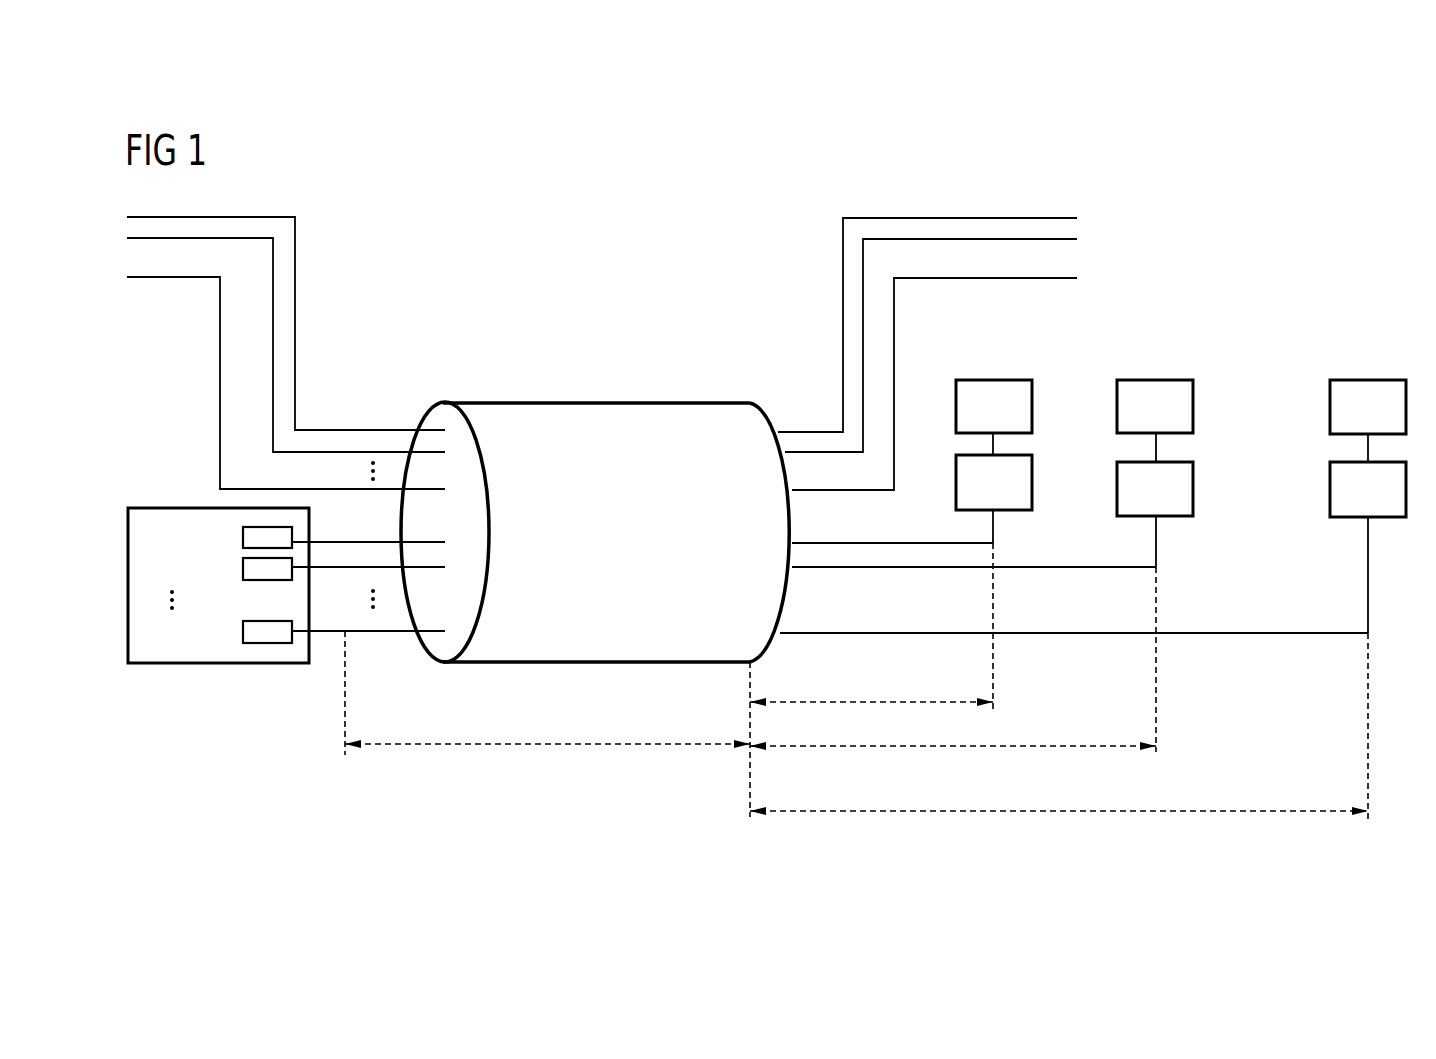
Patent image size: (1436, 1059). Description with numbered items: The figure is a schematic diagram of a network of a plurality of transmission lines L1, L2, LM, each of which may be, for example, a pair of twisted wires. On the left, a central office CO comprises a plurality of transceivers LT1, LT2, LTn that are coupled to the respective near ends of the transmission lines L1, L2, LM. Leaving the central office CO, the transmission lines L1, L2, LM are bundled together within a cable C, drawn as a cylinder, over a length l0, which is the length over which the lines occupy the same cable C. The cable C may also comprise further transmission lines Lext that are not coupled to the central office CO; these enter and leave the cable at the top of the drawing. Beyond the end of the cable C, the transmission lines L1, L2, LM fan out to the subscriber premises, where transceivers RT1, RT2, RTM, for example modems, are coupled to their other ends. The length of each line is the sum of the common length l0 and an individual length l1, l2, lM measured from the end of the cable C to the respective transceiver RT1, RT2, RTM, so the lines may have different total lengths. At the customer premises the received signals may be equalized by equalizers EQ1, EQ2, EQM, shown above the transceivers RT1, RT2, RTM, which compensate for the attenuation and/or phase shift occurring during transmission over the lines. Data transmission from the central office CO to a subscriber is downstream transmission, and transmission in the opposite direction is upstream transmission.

The central office CO is at (156, 506).
The transceiver LT1 is at (316, 541).
The transceiver LT2 is at (316, 573).
The transceiver LTn is at (316, 636).
The cable C is at (597, 402).
The transmission lines Lext is at (1097, 212).
The transmission line L1 is at (906, 542).
The transmission line L2 is at (1066, 567).
The transmission line LM is at (1257, 632).
The equalizer EQ1 is at (994, 417).
The equalizer EQ2 is at (1155, 421).
The equalizer EQM is at (1368, 421).
The transceiver RT1 is at (994, 499).
The transceiver RT2 is at (1155, 514).
The transceiver RTM is at (1368, 547).
The length l0 is at (547, 729).
The length l1 is at (871, 685).
The length l2 is at (953, 729).
The length lM is at (1059, 794).